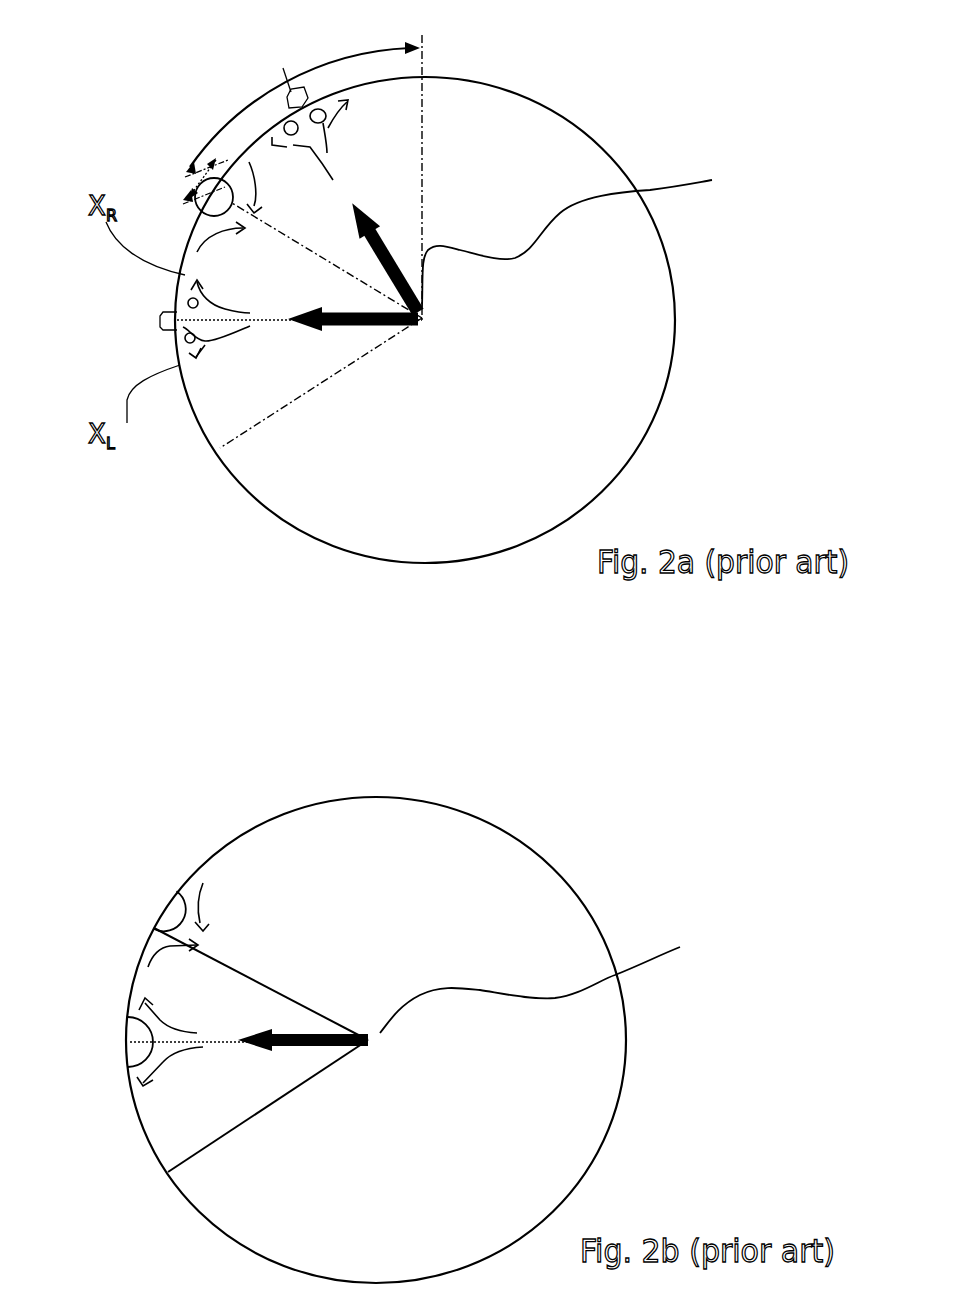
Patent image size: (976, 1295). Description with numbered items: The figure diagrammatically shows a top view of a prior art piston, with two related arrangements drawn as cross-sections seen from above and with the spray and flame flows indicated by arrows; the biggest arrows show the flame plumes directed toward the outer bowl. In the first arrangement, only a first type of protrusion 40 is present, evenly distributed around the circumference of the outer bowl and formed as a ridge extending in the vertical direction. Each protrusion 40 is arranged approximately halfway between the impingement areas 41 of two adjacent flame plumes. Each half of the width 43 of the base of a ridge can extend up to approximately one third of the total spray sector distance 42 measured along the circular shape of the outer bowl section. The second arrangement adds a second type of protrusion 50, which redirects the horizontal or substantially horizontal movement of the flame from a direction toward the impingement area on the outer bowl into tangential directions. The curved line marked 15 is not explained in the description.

In FIG. 2A, the field curve 15 is at (586, 232).
In FIG. 2B, the field curve 15 is at (548, 980).
In FIG. 2A, the first type of protrusion 40 is at (197, 218).
In FIG. 2B, the first type of protrusion 40 is at (173, 905).
In FIG. 2A, the impingement area 41 is at (283, 68).
In FIG. 2A, the total spray sector distance 42 is at (328, 64).
In FIG. 2A, the width of the base of a ridge 43 is at (180, 178).
In FIG. 2B, the second type of protrusion 50 is at (138, 1035).